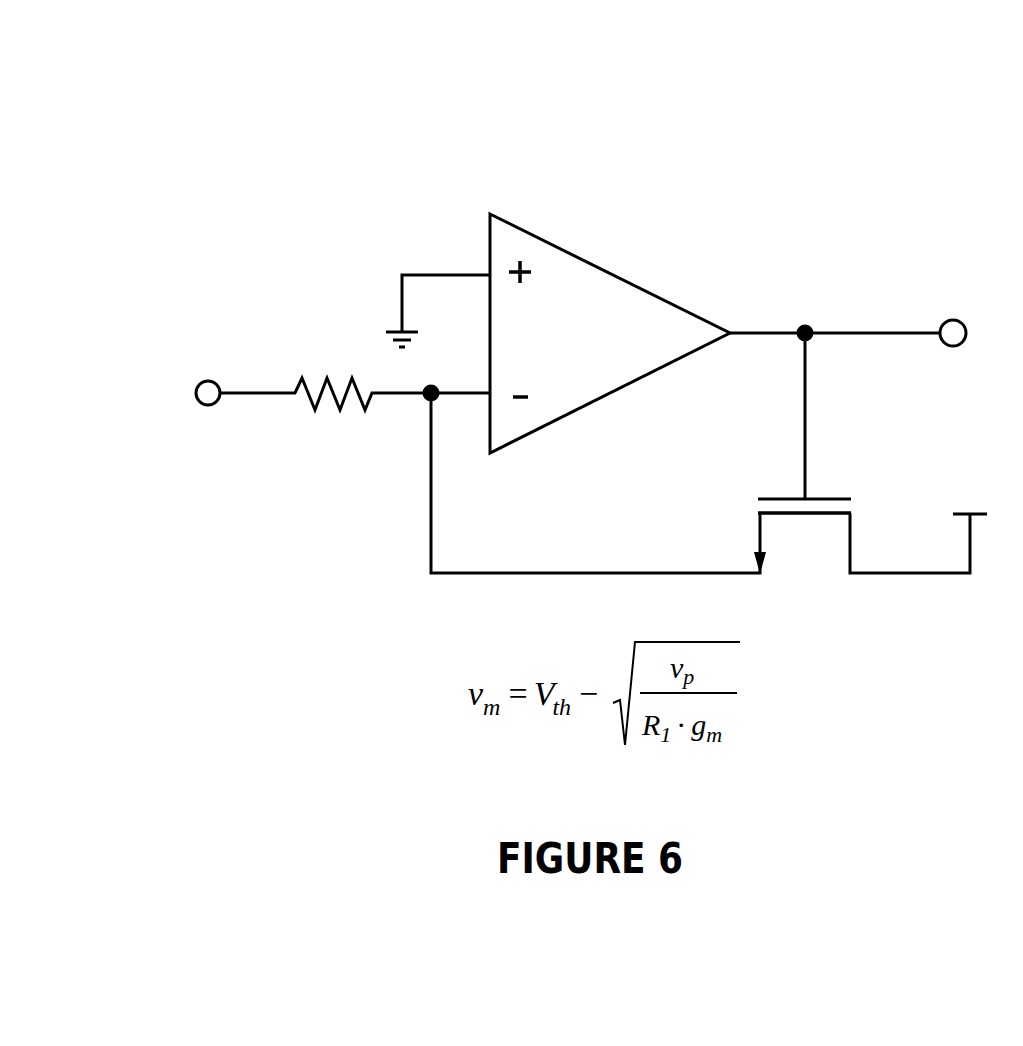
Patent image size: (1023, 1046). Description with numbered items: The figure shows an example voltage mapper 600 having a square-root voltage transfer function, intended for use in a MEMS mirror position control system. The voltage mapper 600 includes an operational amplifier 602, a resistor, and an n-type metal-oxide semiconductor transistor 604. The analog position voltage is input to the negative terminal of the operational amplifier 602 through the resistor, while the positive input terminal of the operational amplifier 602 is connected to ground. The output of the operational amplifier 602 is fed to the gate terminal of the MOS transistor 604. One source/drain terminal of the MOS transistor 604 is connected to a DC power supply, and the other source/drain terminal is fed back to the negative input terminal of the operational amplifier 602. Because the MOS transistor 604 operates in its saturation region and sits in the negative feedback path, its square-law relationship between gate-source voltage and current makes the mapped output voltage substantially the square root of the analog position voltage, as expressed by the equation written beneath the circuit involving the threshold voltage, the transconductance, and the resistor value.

The voltage mapper 600 is at (805, 110).
The operational amplifier 602 is at (610, 270).
The n-type metal-oxide semiconductor transistor 604 is at (827, 497).